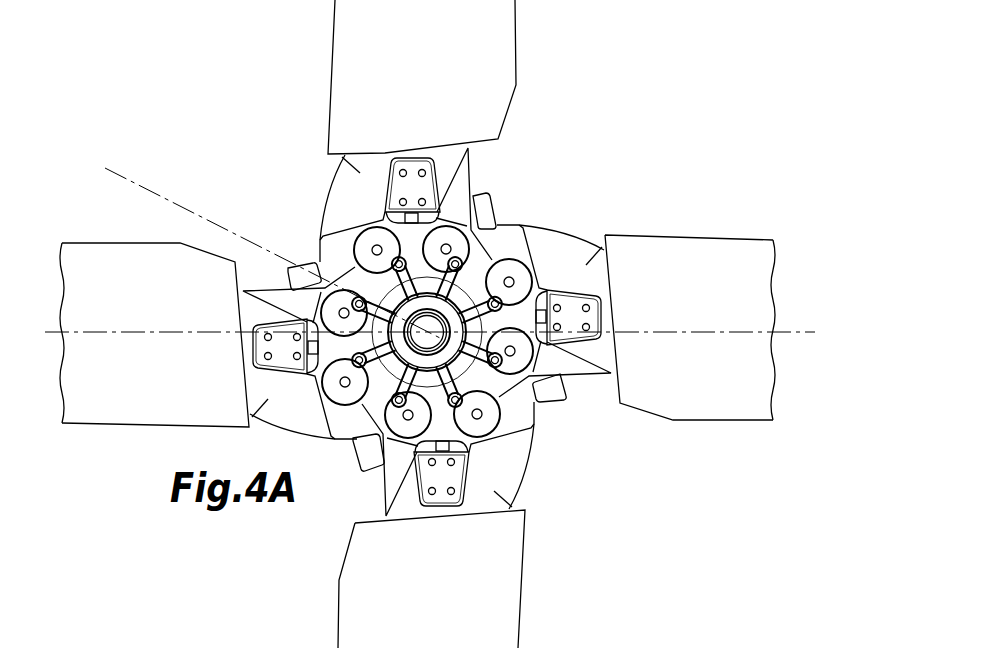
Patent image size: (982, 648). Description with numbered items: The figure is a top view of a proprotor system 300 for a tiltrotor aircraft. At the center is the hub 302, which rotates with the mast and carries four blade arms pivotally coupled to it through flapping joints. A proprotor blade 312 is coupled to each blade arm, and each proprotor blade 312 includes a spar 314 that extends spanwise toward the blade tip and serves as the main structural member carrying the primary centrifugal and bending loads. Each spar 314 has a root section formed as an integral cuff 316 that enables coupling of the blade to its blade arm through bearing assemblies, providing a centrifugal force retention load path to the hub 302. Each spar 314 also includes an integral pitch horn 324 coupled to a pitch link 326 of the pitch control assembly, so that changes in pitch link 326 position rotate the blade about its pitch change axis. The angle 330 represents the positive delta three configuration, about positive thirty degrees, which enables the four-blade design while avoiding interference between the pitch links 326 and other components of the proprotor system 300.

The proprotor system 300 is at (650, 153).
The hub 302 is at (545, 297).
The proprotor blade 312 is at (441, 53).
The spar 314 is at (382, 167).
The integral cuff 316 is at (360, 173).
The integral pitch horn 324 is at (343, 215).
The pitch link 326 is at (293, 277).
The angle 330 is at (131, 181).